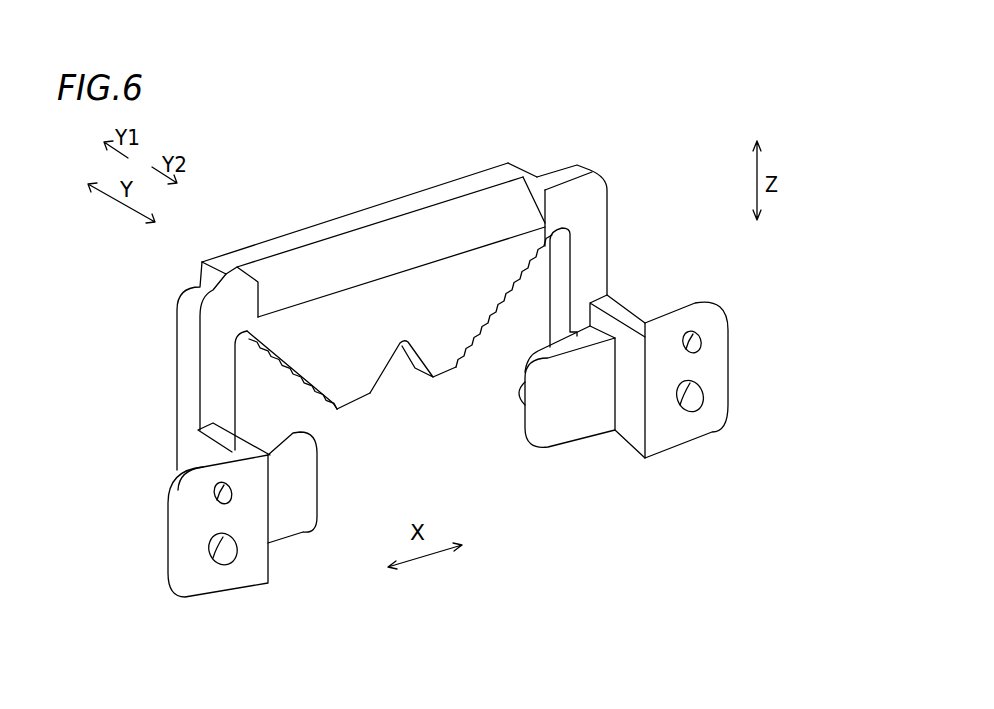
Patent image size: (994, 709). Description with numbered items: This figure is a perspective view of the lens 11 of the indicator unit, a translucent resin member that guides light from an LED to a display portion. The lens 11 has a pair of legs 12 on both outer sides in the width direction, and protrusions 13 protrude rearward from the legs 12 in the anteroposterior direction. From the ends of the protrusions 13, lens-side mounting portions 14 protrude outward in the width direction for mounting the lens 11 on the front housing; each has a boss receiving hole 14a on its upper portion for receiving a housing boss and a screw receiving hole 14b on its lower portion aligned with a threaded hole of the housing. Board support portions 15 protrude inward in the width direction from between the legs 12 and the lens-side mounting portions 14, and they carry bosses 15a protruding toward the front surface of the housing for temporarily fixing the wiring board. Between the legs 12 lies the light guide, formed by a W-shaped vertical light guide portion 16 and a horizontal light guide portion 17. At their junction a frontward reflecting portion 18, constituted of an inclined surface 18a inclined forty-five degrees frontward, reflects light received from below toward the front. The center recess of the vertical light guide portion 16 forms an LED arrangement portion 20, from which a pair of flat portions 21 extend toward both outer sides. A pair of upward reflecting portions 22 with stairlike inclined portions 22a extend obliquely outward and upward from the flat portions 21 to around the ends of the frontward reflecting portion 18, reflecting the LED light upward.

The lens 11 is at (561, 119).
The legs 12 is at (185, 367).
The protrusions 13 is at (198, 430).
The lens-side mounting portions 14 is at (244, 574).
The boss receiving holes 14a is at (217, 495).
The screw receiving holes 14b is at (217, 553).
The board support portions 15 is at (303, 503).
The bosses 15a is at (515, 398).
The vertical light guide portion 16 is at (427, 302).
The horizontal light guide portion 17 is at (279, 247).
The frontward reflecting portion 18 is at (356, 262).
The inclined surface 18a is at (498, 226).
The LED arrangement portion 20 is at (400, 345).
The flat portions 21 is at (353, 403).
The upward reflecting portions 22 is at (246, 333).
The inclined portions 22a is at (271, 376).